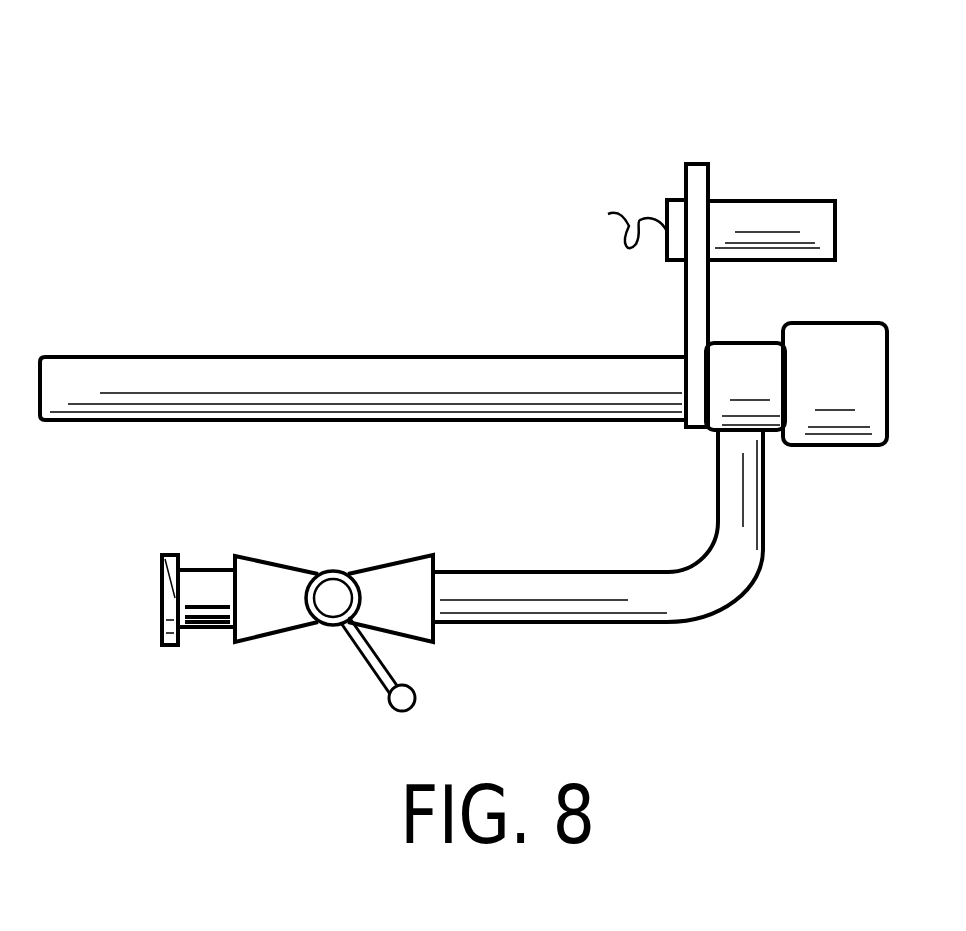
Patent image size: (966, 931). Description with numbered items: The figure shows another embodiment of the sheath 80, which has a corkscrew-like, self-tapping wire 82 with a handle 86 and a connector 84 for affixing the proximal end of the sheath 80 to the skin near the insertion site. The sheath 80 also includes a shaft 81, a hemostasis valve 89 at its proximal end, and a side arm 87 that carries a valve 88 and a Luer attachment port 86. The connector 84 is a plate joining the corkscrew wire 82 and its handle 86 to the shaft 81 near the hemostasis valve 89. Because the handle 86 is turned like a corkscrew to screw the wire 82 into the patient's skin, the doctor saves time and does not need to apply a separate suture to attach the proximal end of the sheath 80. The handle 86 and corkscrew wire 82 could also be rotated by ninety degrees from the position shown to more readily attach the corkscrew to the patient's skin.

The sheath 80 is at (335, 127).
The shaft 81 is at (268, 360).
The corkscrew-like self-tapping wire 82 is at (617, 210).
The connector 84 is at (697, 164).
The handle 86 is at (755, 201).
The side arm 87 is at (638, 572).
The valve 88 is at (342, 563).
The hemostasis valve 89 is at (848, 448).